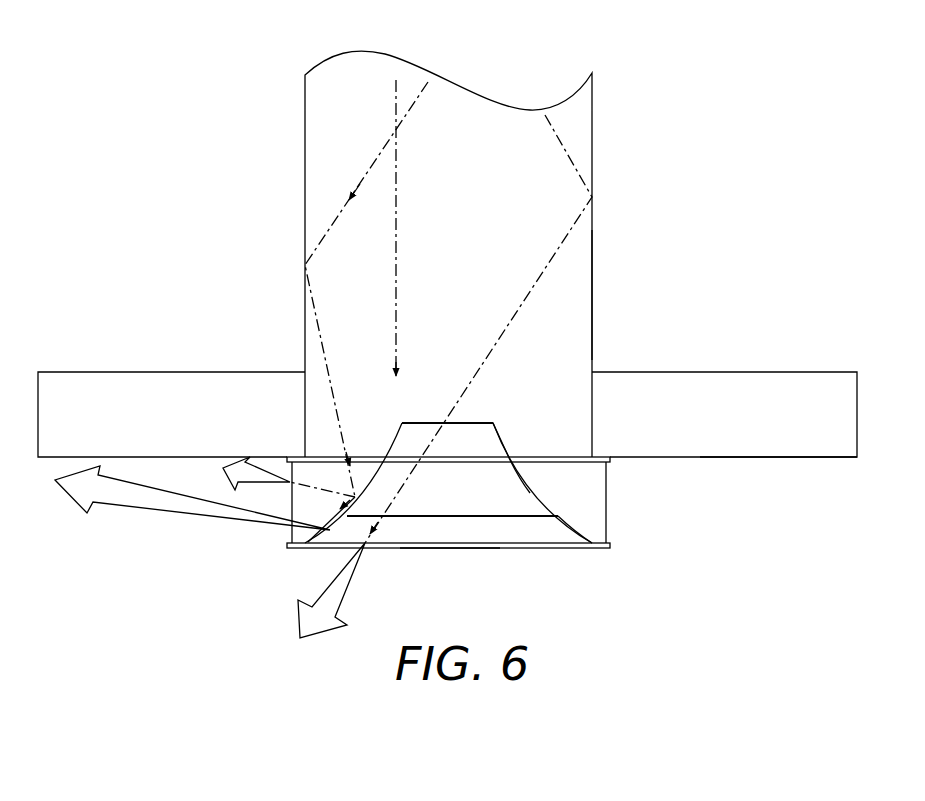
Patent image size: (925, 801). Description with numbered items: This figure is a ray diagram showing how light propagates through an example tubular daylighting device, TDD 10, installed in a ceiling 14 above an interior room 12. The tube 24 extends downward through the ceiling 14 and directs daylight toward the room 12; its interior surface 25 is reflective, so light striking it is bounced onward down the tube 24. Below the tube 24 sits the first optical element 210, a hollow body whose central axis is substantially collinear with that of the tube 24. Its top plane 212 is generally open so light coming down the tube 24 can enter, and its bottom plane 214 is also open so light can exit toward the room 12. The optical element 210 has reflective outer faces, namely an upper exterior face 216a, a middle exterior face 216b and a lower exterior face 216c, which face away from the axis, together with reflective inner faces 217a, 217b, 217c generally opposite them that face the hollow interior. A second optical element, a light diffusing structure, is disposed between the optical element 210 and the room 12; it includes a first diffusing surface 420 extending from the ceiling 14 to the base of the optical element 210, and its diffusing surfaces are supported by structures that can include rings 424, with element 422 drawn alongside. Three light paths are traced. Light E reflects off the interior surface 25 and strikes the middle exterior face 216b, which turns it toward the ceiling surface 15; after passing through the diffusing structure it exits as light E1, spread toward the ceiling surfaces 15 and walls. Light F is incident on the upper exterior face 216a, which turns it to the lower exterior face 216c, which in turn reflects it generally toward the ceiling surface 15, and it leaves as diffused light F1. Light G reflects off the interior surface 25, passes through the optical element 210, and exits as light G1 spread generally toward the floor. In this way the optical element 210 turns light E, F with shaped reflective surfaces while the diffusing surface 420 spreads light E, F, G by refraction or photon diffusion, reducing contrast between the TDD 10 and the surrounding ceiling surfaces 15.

The TDD 10 is at (701, 254).
The interior room 12 is at (506, 488).
The ceiling 14 is at (762, 372).
The ceiling surface 15 is at (763, 461).
The tube 24 is at (593, 225).
The interior surface 25 is at (589, 298).
The optical element 210 is at (440, 530).
The top plane 212 is at (415, 420).
The bottom plane 214 is at (491, 553).
The upper exterior face 216a is at (530, 417).
The middle exterior face 216b is at (572, 483).
The lower exterior face 216c is at (578, 527).
The reflective inner face 217a is at (486, 432).
The reflective inner face 217b is at (526, 492).
The reflective inner face 217c is at (556, 525).
The first diffusing surface 420 is at (610, 473).
The housing top plate 422 is at (600, 457).
The ring 424 is at (600, 548).
The light E is at (417, 103).
The light F is at (396, 158).
The light G is at (563, 157).
The light E1 is at (230, 474).
The light F1 is at (120, 505).
The light G1 is at (325, 588).